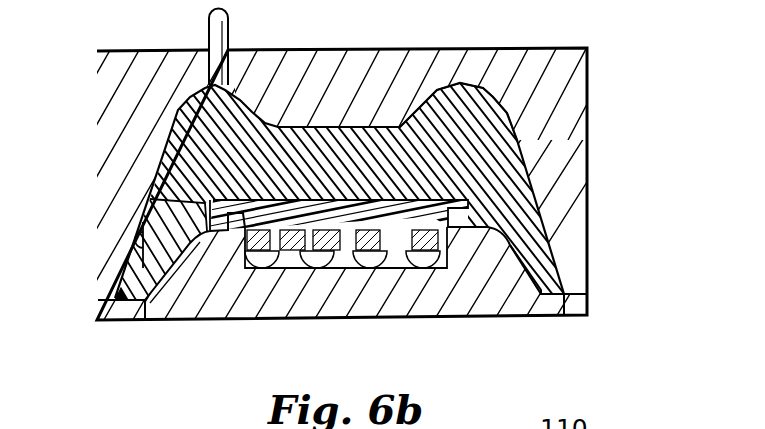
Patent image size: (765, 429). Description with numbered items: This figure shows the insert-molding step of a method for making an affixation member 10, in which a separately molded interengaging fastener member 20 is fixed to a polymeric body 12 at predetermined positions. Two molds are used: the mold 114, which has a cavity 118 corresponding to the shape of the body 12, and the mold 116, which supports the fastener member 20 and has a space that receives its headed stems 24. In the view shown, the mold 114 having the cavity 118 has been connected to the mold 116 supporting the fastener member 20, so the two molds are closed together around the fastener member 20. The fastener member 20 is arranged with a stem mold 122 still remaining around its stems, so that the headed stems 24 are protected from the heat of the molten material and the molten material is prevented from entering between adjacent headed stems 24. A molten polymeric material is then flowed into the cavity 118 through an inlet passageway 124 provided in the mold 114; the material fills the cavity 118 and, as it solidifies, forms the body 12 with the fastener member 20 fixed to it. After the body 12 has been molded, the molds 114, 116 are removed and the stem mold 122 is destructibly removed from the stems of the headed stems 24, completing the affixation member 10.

The affixation member 10 is at (497, 80).
The body 12 is at (540, 170).
The interengaging fastener member 20 is at (208, 204).
The headed stems 24 is at (357, 272).
The mold 114 is at (578, 101).
The mold 116 is at (482, 302).
The cavity 118 is at (140, 246).
The stem mold 122 is at (293, 268).
The inlet passageway 124 is at (216, 33).